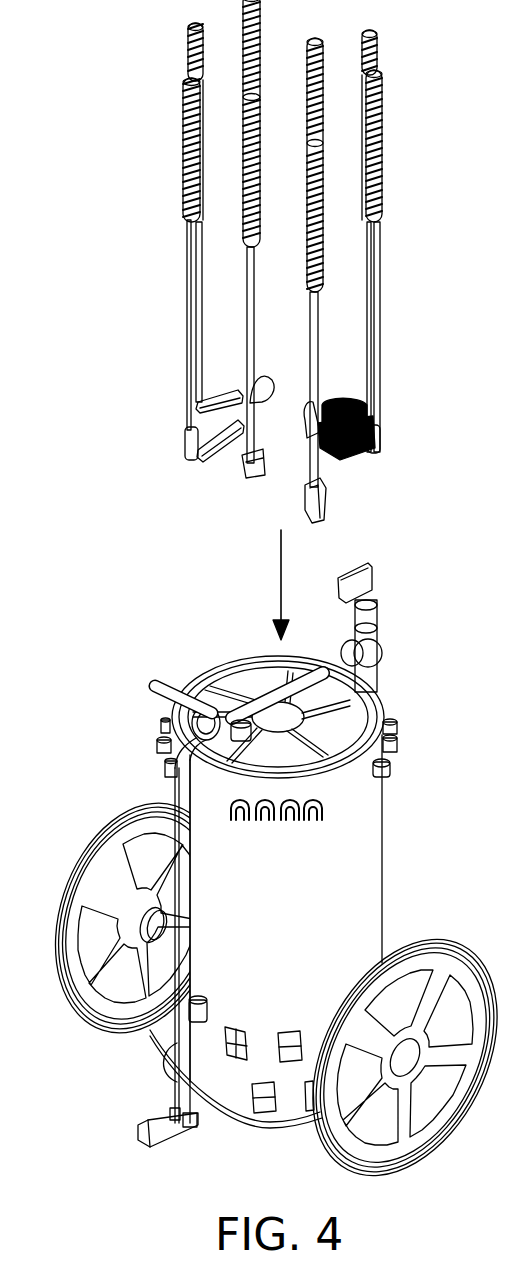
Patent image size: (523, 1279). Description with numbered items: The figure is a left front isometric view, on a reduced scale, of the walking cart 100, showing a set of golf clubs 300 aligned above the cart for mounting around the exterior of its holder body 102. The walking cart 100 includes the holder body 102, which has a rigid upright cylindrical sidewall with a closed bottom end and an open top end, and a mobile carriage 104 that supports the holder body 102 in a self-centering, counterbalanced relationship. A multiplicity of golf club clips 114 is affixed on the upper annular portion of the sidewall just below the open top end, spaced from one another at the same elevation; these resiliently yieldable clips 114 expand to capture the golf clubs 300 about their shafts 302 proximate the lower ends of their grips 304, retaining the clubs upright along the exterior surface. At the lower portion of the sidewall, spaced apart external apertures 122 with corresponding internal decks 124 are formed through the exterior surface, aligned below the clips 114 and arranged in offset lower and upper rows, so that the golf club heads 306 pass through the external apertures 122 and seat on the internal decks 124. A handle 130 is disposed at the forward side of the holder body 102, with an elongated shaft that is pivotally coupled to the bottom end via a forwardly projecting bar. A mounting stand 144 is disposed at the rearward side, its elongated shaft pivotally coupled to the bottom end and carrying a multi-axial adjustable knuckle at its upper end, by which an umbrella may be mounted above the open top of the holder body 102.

The walking cart 100 is at (274, 885).
The holder body 102 is at (387, 895).
The mobile carriage 104 is at (108, 833).
The golf club clips 114 is at (333, 810).
The external apertures 122 is at (237, 1048).
The internal decks 124 is at (265, 1108).
The handle 130 is at (194, 844).
The mounting stand 144 is at (388, 637).
The golf clubs 300 is at (330, 262).
The shafts 302 is at (318, 362).
The grips 304 is at (367, 177).
The golf club heads 306 is at (323, 485).